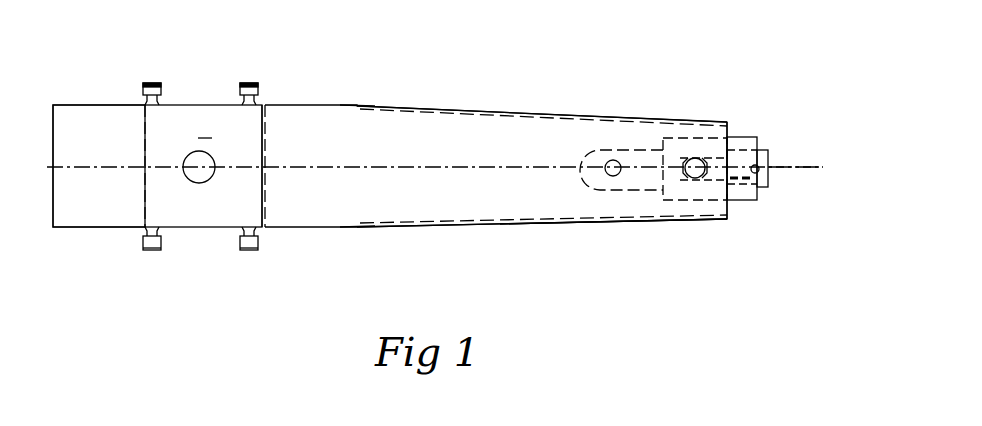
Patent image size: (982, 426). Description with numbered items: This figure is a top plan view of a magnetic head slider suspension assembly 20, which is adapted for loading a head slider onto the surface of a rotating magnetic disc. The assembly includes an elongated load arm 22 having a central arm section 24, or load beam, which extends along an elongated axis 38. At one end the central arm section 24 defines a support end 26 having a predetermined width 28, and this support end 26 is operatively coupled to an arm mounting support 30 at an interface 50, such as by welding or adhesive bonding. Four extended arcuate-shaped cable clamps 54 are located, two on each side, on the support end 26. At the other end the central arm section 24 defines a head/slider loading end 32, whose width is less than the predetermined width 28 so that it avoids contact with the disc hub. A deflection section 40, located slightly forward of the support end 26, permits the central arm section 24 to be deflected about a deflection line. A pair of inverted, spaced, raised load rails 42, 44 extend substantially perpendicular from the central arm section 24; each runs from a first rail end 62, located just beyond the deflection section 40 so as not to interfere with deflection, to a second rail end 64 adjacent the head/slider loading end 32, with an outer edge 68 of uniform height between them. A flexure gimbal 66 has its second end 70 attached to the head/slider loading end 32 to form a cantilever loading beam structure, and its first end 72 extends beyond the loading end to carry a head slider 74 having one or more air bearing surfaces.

The magnetic head slider suspension assembly 20 is at (505, 72).
The elongated load arm 22 is at (566, 104).
The central arm section 24 is at (560, 206).
The support end 26 is at (205, 228).
The predetermined width 28 is at (145, 145).
The arm mounting support 30 is at (117, 212).
The head/slider loading end 32 is at (705, 210).
The elongated axis 38 is at (782, 165).
The deflection section 40 is at (307, 204).
The load rail 42 is at (390, 227).
The load rail 44 is at (387, 108).
The interface 50 is at (207, 134).
The extended arcuate-shaped cable clamps 54 is at (245, 283).
The first rail end 62 is at (355, 106).
The second rail end 64 is at (726, 122).
The flexure gimbal 66 is at (771, 187).
The outer edge 68 is at (520, 114).
The second end of the flexure gimbal 70 is at (613, 178).
The first end of the flexure gimbal 72 is at (766, 152).
The head slider 74 is at (761, 207).